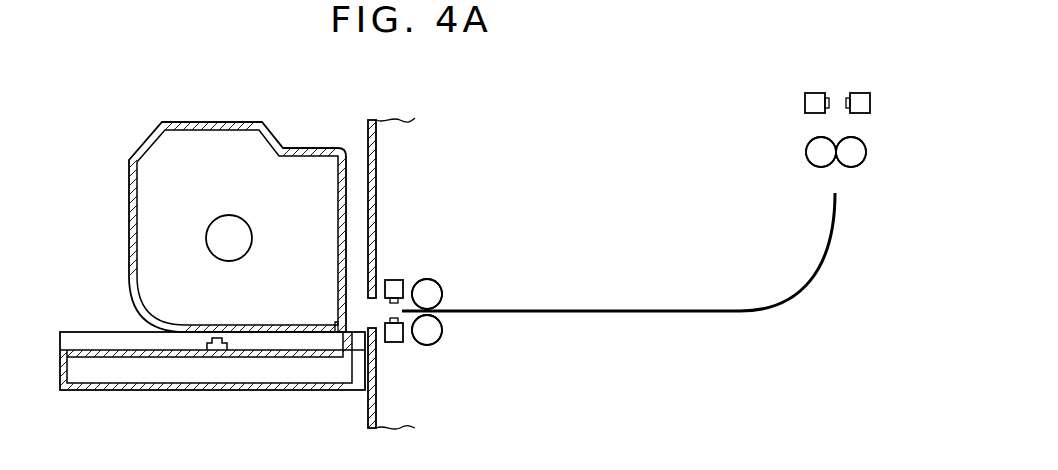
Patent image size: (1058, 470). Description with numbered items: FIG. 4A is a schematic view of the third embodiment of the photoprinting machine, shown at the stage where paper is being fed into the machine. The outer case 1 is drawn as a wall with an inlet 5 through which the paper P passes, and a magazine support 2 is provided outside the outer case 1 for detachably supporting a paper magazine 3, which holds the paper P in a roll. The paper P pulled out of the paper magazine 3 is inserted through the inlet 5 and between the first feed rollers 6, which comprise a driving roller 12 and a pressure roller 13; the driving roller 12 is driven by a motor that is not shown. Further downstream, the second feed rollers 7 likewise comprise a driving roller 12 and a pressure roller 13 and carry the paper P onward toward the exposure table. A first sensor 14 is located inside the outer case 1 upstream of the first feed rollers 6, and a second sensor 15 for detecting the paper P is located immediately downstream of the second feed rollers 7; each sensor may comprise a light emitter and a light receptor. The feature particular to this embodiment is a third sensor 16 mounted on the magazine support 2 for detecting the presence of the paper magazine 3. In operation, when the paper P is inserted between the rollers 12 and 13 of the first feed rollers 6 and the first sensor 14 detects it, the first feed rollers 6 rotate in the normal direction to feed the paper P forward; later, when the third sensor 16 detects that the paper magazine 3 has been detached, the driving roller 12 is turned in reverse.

The outer case 1 is at (366, 135).
The magazine support 2 is at (98, 330).
The paper magazine 3 is at (155, 130).
The inlet 5 is at (372, 319).
The first feed rollers 6 is at (434, 273).
The second feed rollers 7 is at (804, 152).
The driving roller 12 is at (437, 292).
The pressure roller 13 is at (435, 332).
The first sensor 14 is at (395, 275).
The second sensor 15 is at (804, 103).
The third sensor 16 is at (215, 351).
The paper P is at (767, 305).